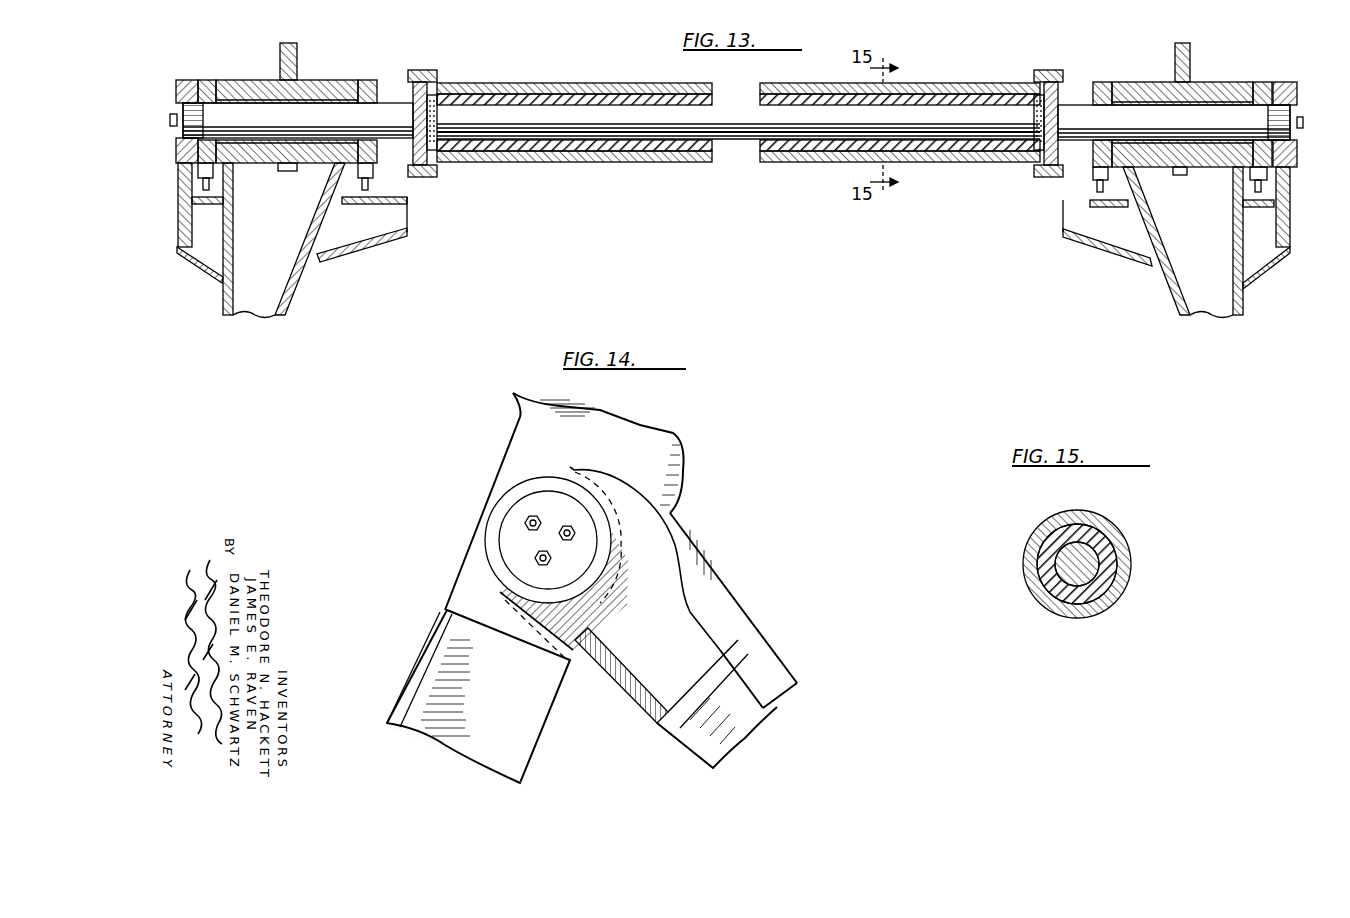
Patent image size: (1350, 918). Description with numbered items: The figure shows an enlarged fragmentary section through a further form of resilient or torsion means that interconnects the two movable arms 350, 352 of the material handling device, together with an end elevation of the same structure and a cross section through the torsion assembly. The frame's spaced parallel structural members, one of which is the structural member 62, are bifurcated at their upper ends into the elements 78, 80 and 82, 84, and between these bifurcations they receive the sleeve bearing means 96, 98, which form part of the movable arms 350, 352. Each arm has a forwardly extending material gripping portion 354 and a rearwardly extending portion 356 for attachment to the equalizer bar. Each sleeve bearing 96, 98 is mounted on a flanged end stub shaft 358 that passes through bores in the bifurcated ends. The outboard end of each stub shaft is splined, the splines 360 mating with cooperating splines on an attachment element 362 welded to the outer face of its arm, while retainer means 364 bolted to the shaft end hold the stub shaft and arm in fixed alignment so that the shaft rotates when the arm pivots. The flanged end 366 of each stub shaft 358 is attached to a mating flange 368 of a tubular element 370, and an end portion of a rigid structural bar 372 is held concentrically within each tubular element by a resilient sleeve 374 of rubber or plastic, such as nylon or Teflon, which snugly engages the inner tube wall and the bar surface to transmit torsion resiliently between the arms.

In FIG. 14, the structural member 62 is at (400, 638).
In FIG. 13, the bifurcation element 78 is at (1262, 82).
In FIG. 13, the bifurcation element 80 is at (1103, 82).
In FIG. 13, the bifurcation element 82 is at (368, 80).
In FIG. 13, the bifurcation element 84 is at (208, 84).
In FIG. 13, the sleeve bearing means 96 is at (1147, 82).
In FIG. 13, the sleeve bearing means 98 is at (303, 80).
In FIG. 13, the movable arm 350 is at (1208, 305).
In FIG. 13, the movable arm 352 is at (264, 305).
In FIG. 14, the movable arm 352 is at (780, 652).
In FIG. 13, the material gripping portion 354 is at (325, 282).
In FIG. 14, the material gripping portion 354 is at (778, 706).
In FIG. 13, the rearwardly extending portion 356 is at (297, 48).
In FIG. 14, the rearwardly extending portion 356 is at (660, 432).
In FIG. 13, the flanged end stub shaft 358 is at (395, 104).
In FIG. 13, the splines 360 is at (192, 106).
In FIG. 13, the attachment element 362 is at (180, 228).
In FIG. 13, the retainer means 364 is at (170, 112).
In FIG. 13, the flanged end 366 is at (418, 178).
In FIG. 13, the mating flange 368 is at (430, 70).
In FIG. 13, the tubular element 370 is at (676, 162).
In FIG. 15, the tubular element 370 is at (1027, 582).
In FIG. 13, the rigid structural bar 372 is at (738, 140).
In FIG. 15, the rigid structural bar 372 is at (1065, 578).
In FIG. 13, the resilient sleeve 374 is at (580, 150).
In FIG. 15, the resilient sleeve 374 is at (1092, 596).